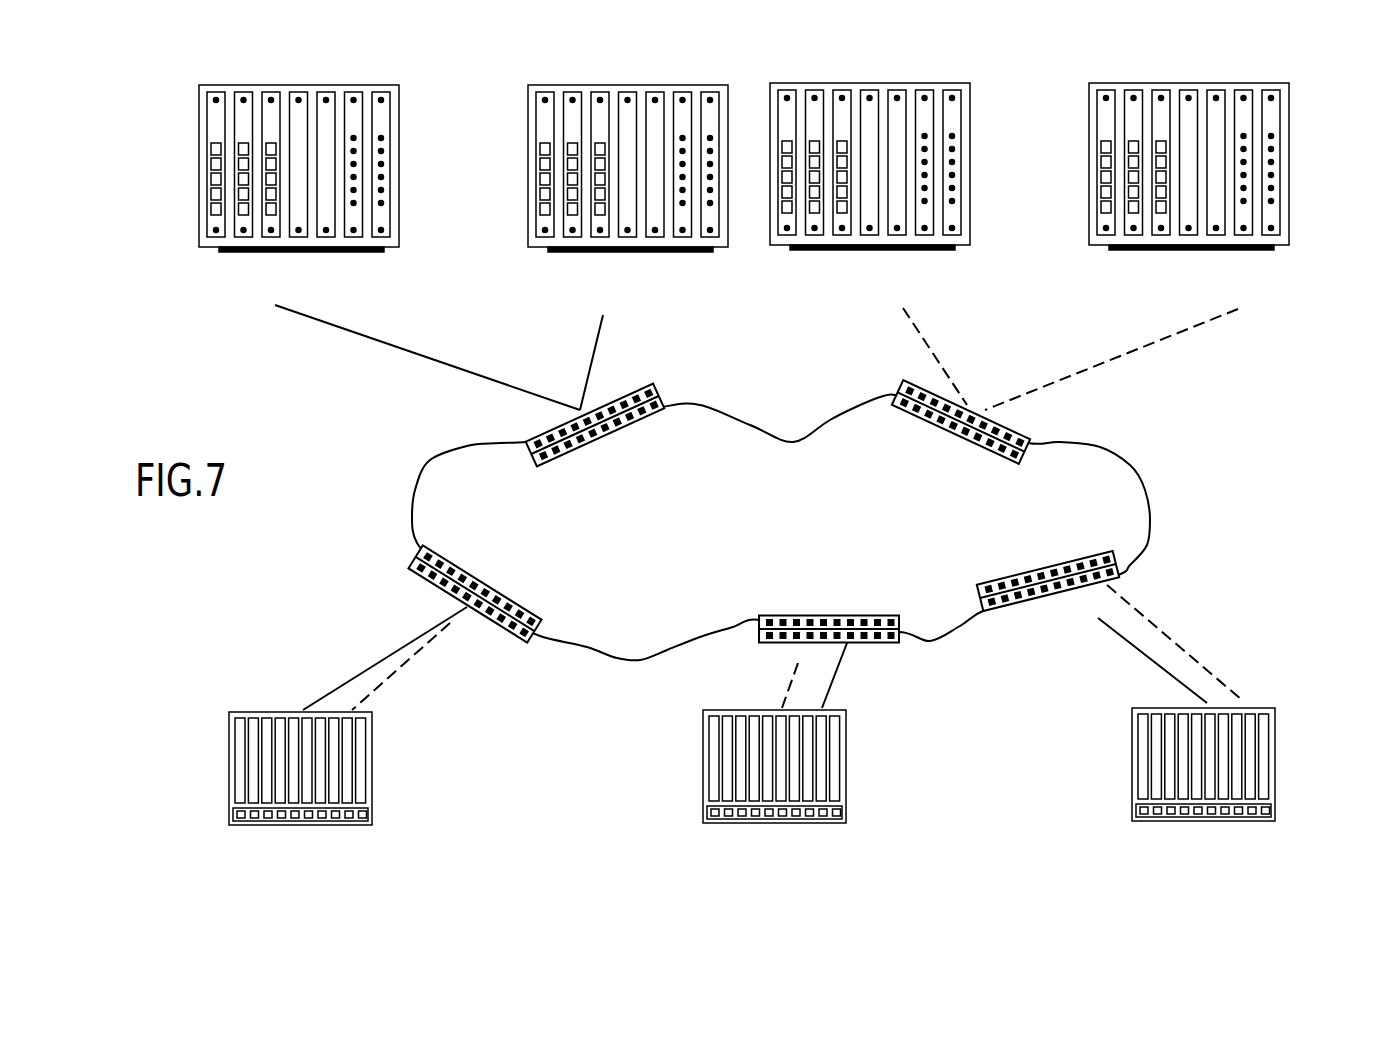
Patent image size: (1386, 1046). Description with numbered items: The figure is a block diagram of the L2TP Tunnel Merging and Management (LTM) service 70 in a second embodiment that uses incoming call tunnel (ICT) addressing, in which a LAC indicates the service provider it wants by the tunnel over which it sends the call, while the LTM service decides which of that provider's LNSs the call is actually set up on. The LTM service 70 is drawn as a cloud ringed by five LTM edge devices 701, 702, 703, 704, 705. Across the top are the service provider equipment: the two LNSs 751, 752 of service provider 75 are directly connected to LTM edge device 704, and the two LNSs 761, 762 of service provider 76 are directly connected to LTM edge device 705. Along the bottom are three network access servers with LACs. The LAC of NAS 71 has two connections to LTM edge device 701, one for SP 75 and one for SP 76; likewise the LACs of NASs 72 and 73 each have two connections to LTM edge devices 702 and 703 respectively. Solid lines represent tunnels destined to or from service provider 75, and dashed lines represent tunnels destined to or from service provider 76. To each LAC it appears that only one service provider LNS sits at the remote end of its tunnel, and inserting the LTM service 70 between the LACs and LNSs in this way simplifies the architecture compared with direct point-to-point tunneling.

The LTM service 70 is at (1163, 481).
The LTM edge device 701 is at (418, 570).
The LTM edge device 702 is at (777, 642).
The LTM edge device 703 is at (1118, 575).
The LTM edge device 704 is at (632, 385).
The LTM edge device 705 is at (908, 375).
The NAS 71 is at (372, 772).
The NAS 72 is at (846, 770).
The NAS 73 is at (1275, 770).
The service provider 75 is at (503, 171).
The LNS 751 is at (208, 255).
The LNS 752 is at (521, 256).
The service provider 76 is at (1077, 186).
The LNS 761 is at (898, 83).
The LNS 762 is at (1200, 83).